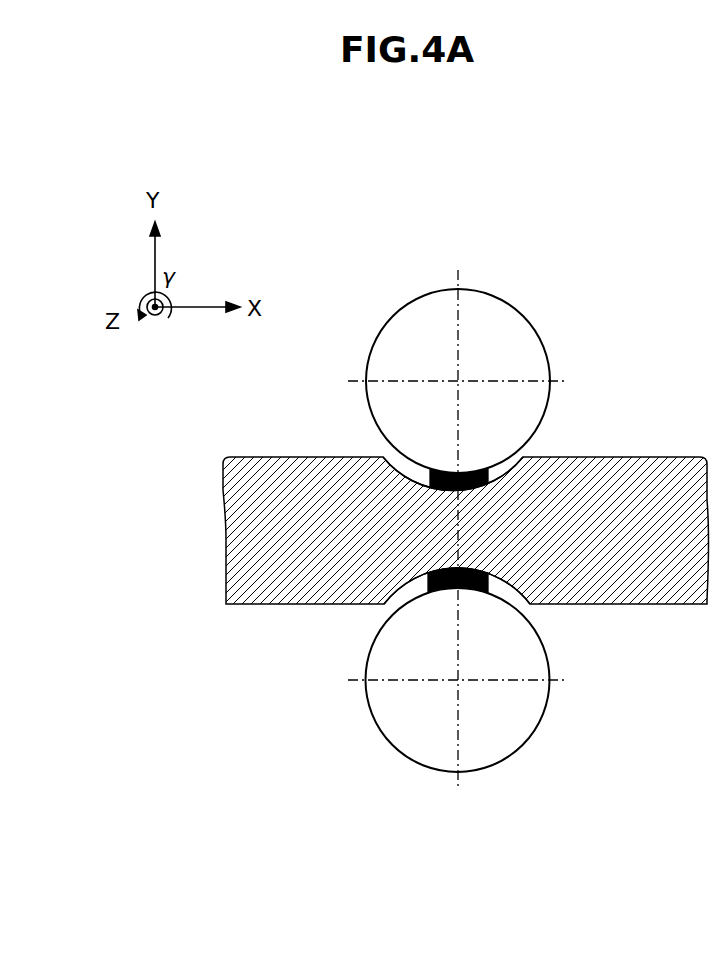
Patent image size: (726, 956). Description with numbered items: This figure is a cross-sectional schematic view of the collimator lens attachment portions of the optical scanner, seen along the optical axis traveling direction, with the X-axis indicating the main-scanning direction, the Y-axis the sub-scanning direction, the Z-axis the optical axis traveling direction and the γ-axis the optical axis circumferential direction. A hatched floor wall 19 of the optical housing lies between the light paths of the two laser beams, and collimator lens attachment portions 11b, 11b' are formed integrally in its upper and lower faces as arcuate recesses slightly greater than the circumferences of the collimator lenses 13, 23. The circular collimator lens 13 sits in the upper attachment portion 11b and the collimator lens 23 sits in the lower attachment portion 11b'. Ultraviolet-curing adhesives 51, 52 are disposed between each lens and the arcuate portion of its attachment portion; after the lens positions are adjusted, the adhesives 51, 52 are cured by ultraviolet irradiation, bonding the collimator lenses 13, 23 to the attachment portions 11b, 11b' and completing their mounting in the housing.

The collimator lens 13 is at (436, 282).
The collimator lens 23 is at (502, 778).
The floor wall 19 is at (275, 520).
The collimator lens attachment portion 11b is at (536, 425).
The collimator lens attachment portion 11b' is at (543, 628).
The ultraviolet-curing adhesive 51 is at (430, 480).
The ultraviolet-curing adhesive 52 is at (430, 587).